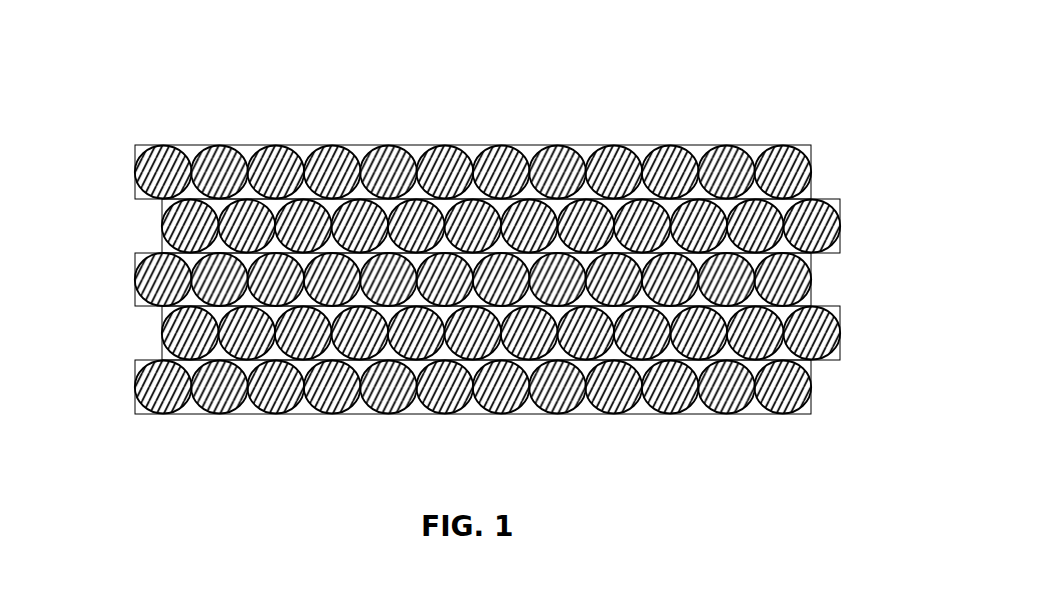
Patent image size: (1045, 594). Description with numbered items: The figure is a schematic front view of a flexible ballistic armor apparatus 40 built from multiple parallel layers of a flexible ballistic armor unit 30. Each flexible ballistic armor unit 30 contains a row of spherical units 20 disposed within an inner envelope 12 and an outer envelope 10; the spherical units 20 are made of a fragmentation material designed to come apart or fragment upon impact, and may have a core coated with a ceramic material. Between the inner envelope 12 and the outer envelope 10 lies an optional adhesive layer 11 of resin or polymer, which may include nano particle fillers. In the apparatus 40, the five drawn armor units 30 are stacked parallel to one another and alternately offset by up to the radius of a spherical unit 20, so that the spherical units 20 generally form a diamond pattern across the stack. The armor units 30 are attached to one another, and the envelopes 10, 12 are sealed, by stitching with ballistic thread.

The outer envelope 10 is at (425, 136).
The adhesive layer 11 is at (439, 222).
The inner envelope 12 is at (439, 222).
The spherical unit 20 is at (129, 160).
The flexible ballistic armor unit 30 is at (107, 359).
The flexible ballistic armor apparatus 40 is at (873, 132).